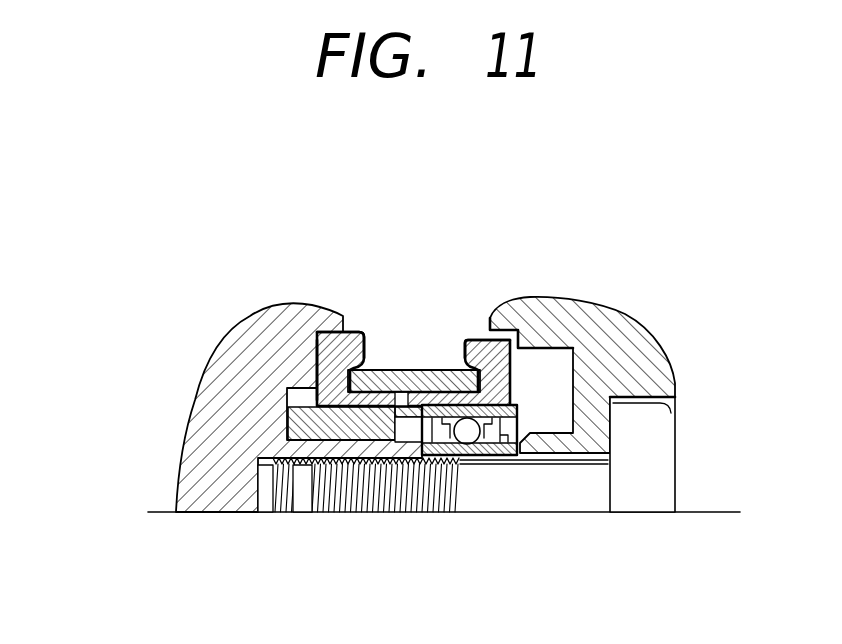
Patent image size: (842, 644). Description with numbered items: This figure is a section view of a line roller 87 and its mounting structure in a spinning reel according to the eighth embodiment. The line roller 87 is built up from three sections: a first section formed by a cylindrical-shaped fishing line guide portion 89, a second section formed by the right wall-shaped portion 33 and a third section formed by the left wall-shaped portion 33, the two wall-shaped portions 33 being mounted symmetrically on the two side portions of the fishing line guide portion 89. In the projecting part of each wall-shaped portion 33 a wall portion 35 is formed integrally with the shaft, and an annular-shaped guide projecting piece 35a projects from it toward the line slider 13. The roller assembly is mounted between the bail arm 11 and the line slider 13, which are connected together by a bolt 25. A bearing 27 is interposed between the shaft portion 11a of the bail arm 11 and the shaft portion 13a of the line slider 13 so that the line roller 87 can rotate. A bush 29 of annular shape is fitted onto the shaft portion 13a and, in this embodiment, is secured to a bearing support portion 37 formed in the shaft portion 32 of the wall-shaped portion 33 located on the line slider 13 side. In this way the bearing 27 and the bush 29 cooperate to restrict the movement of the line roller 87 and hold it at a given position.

The bail arm 11 is at (682, 382).
The shaft portion of the bail arm 11a is at (530, 465).
The line slider 13 is at (172, 463).
The shaft portion of the line slider 13a is at (312, 466).
The bolt 25 is at (665, 448).
The bearing 27 is at (470, 456).
The bush 29 is at (290, 415).
The shaft portion of the wall-shaped portion 32 is at (348, 388).
The wall-shaped portion 33 is at (309, 352).
The wall portion 35 is at (312, 356).
The guide projecting piece 35a is at (343, 328).
The bearing support portion 37 is at (425, 443).
The line roller 87 is at (420, 361).
The fishing line guide portion 89 is at (397, 368).